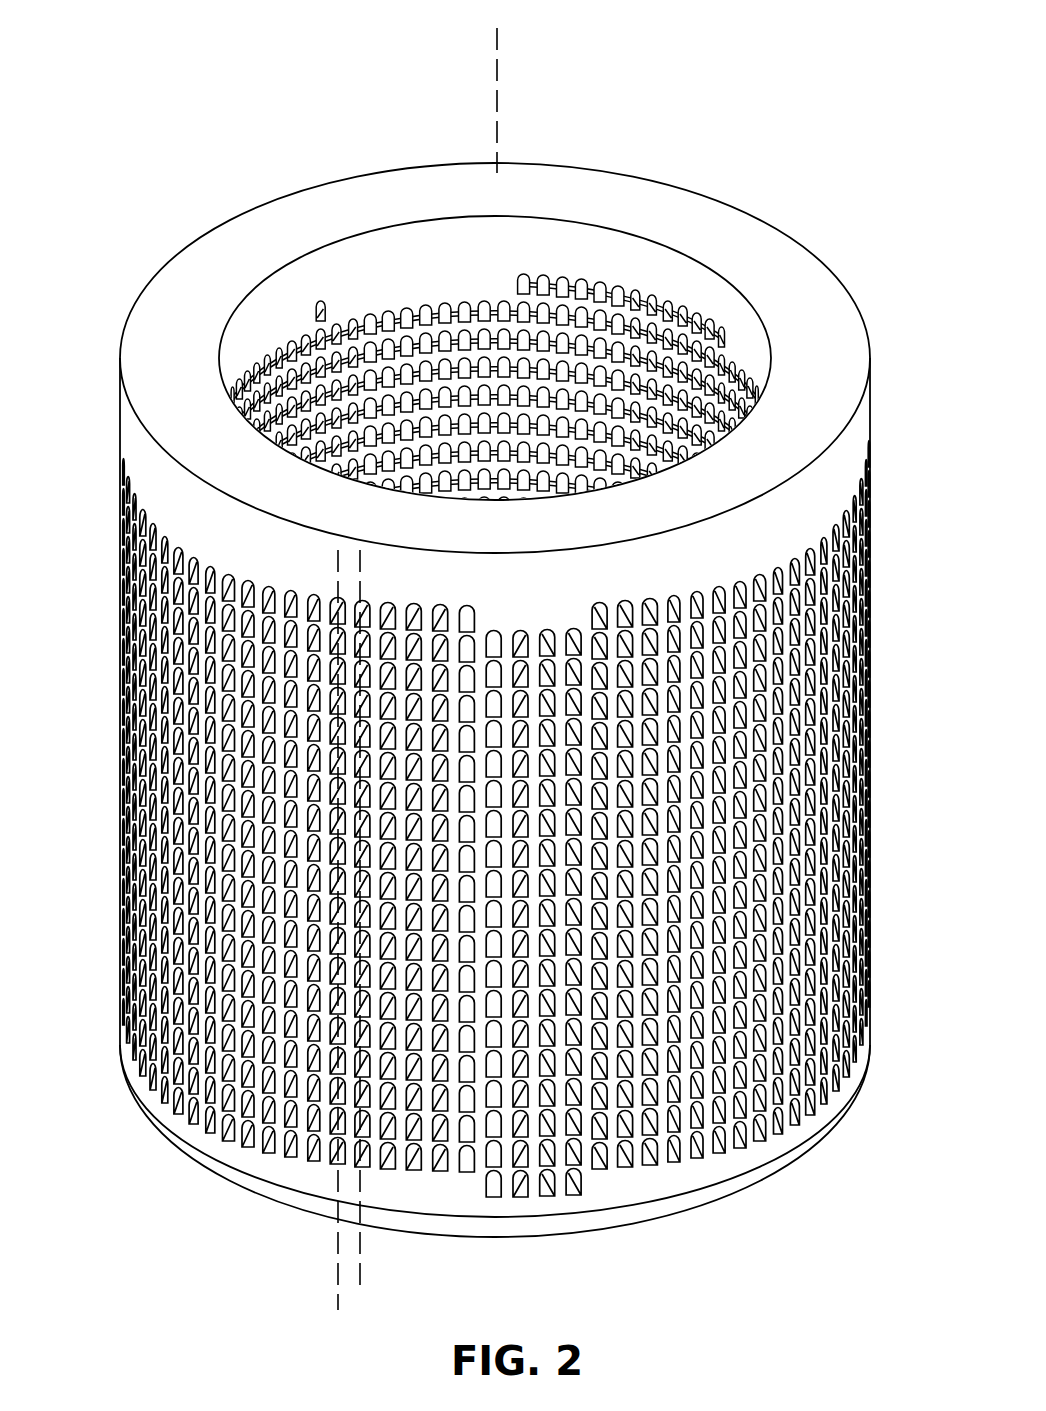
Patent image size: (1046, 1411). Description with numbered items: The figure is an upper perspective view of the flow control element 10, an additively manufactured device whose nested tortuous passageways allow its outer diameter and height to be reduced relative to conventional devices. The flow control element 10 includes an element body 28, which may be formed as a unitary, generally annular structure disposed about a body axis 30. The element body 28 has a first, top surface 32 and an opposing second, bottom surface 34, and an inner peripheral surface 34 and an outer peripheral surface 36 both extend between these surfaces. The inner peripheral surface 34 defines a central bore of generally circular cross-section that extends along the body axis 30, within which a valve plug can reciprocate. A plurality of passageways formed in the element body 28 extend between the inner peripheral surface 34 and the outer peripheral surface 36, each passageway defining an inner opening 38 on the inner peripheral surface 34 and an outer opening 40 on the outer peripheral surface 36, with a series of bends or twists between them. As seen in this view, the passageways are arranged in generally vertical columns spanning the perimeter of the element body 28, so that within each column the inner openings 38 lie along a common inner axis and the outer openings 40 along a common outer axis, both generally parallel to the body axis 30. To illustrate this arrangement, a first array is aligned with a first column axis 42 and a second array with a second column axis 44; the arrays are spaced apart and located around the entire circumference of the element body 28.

The flow control element 10 is at (778, 137).
The element body 28 is at (855, 285).
The body axis 30 is at (498, 57).
The first surface 32 is at (282, 208).
The inner peripheral surface 34 is at (385, 247).
The outer peripheral surface 36 is at (128, 430).
The inner opening 38 is at (577, 287).
The outer opening 40 is at (784, 561).
The first column axis 42 is at (360, 1265).
The second column axis 44 is at (338, 1277).